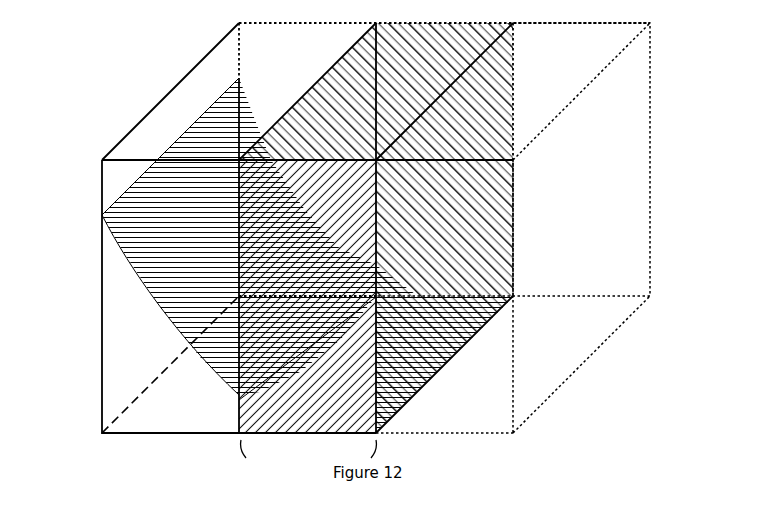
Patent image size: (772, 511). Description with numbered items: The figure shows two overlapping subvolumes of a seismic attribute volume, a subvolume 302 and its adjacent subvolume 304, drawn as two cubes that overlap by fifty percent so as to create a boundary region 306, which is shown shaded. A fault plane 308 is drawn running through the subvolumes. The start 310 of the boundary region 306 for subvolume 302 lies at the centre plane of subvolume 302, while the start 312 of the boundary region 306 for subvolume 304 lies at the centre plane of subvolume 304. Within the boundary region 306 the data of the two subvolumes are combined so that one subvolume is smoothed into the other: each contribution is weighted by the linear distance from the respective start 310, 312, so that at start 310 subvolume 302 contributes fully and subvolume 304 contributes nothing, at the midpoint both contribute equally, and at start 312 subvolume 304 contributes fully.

The subvolume 302 is at (104, 386).
The adjacent subvolume 304 is at (633, 98).
The boundary region 306 is at (309, 460).
The fault plane 308 is at (153, 257).
The start of the boundary region for subvolume 302 310 is at (237, 187).
The start of the boundary region for subvolume 304 312 is at (377, 343).